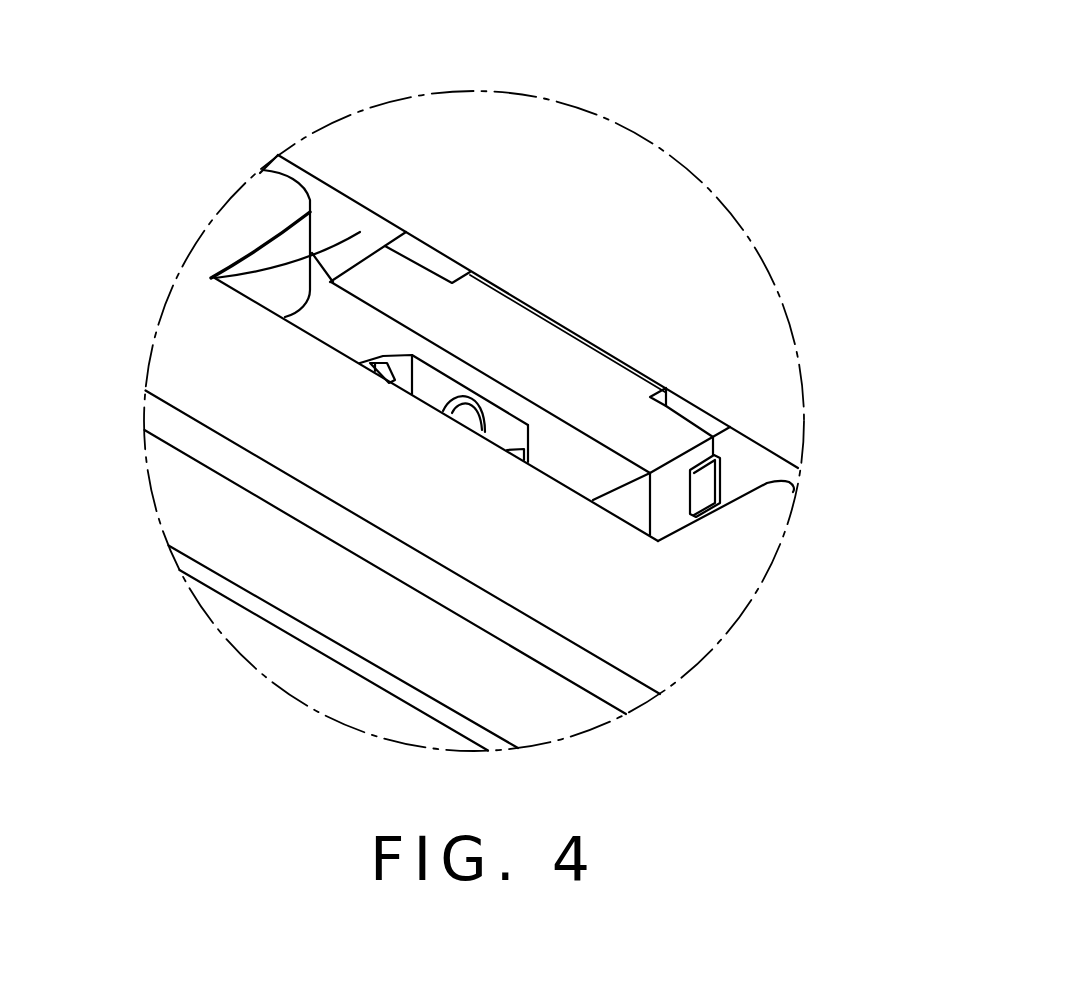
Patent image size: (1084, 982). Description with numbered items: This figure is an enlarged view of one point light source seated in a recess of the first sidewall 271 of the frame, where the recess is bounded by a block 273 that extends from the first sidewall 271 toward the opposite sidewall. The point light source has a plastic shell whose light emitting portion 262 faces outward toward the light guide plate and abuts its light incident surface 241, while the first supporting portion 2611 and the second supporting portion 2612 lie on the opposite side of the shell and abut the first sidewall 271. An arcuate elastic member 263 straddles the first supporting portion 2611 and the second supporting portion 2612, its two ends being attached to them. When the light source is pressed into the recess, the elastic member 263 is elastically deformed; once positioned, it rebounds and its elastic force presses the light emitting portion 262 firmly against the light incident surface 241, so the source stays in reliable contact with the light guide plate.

The light incident surface 241 is at (215, 278).
The light emitting portion 262 is at (582, 328).
The first supporting portion 2611 is at (345, 332).
The second supporting portion 2612 is at (570, 457).
The elastic member 263 is at (393, 378).
The first sidewall 271 is at (605, 578).
The block 273 is at (256, 211).